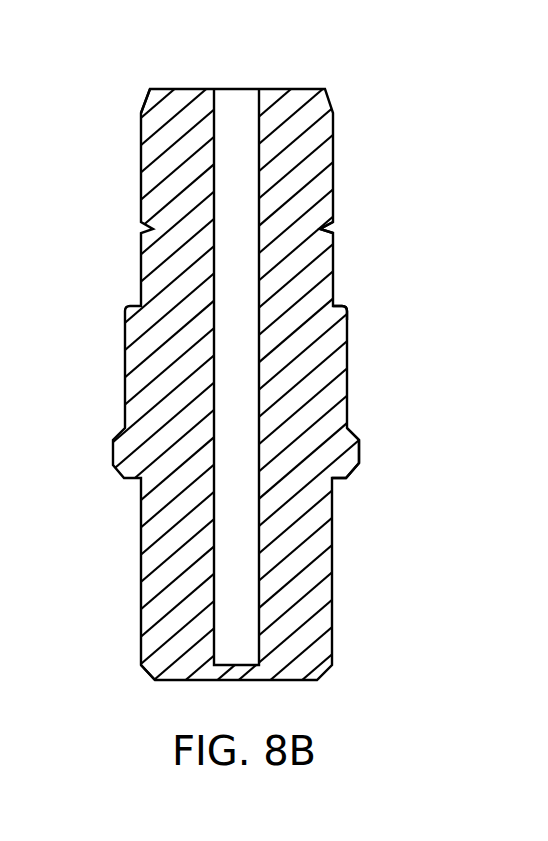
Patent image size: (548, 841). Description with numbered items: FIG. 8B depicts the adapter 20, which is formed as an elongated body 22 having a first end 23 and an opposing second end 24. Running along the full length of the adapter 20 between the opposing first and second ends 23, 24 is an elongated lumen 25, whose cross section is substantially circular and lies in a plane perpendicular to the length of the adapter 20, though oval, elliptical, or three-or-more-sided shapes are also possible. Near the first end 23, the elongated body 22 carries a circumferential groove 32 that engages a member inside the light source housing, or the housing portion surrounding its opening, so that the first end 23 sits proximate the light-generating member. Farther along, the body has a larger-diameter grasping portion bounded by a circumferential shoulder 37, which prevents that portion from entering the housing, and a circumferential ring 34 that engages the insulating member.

The adapter 20 is at (248, 395).
The elongated body 22 is at (338, 380).
The first end 23 is at (141, 115).
The second end 24 is at (147, 668).
The elongated lumen 25 is at (240, 98).
The circumferential groove 32 is at (333, 228).
The circumferential ring 34 is at (357, 453).
The circumferential shoulder 37 is at (344, 313).